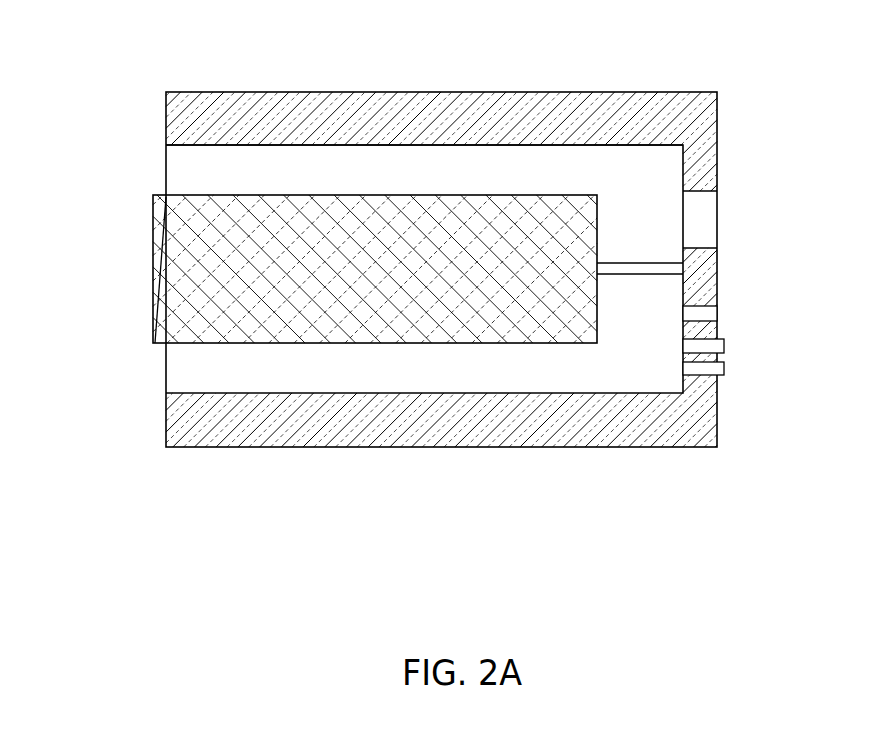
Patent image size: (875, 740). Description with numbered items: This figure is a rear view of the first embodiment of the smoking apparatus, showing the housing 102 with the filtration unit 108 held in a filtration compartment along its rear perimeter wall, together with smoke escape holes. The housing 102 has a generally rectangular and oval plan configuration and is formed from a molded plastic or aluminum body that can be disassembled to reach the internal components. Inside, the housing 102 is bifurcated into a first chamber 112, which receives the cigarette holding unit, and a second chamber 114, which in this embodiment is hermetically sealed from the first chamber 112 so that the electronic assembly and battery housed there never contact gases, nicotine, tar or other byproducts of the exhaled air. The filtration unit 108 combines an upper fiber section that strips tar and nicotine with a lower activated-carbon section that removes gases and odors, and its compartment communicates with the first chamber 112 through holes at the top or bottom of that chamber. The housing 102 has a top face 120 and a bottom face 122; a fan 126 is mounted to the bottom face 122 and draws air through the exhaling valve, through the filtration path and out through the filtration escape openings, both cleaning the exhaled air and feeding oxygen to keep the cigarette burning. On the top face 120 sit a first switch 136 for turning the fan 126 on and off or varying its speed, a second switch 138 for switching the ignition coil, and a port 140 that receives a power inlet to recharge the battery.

The housing 102 is at (752, 74).
The filtration unit 108 is at (200, 194).
The first chamber 112 is at (427, 144).
The second chamber 114 is at (418, 394).
The top face 120 is at (717, 155).
The bottom face 122 is at (166, 108).
The fan 126 is at (155, 242).
The first switch 136 is at (725, 368).
The second switch 138 is at (725, 341).
The port 140 is at (717, 312).